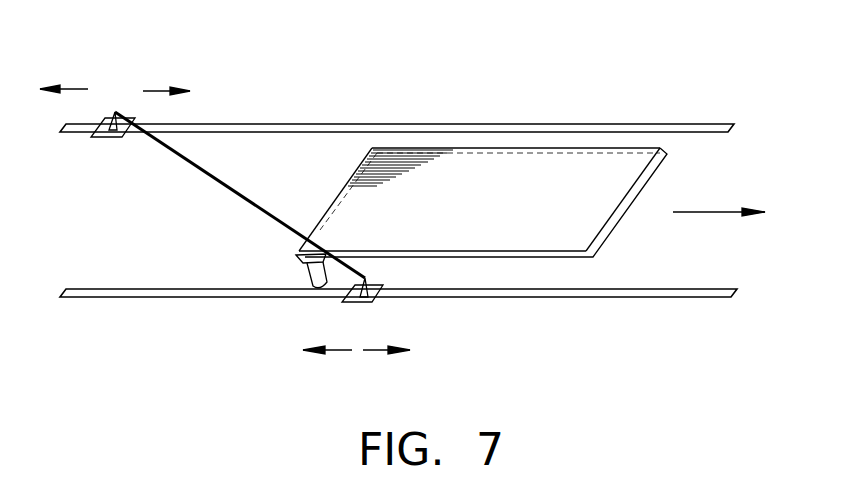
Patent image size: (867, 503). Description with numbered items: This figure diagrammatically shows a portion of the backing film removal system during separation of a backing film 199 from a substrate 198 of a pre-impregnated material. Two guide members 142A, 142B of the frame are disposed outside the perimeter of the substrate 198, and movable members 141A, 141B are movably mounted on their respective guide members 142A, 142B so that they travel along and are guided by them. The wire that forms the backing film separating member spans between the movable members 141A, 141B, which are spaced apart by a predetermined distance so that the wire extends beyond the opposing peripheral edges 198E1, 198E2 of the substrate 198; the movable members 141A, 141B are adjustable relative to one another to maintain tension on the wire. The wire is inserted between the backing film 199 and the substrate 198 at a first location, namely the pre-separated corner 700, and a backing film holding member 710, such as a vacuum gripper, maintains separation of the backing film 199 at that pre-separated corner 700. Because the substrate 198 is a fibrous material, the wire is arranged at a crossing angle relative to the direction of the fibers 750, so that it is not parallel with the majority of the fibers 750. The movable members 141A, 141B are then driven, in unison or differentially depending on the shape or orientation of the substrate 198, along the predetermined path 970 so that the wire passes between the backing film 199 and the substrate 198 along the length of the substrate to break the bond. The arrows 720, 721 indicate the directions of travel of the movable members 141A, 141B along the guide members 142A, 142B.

The movable member 141A is at (108, 140).
The movable member 141B is at (357, 303).
The guide member 142A is at (688, 128).
The guide member 142B is at (690, 297).
The substrate 198 is at (563, 160).
The peripheral edge 198E1 is at (487, 163).
The peripheral edge 198E2 is at (484, 252).
The backing film 199 is at (528, 258).
The pre-separated corner 700 is at (280, 262).
The backing film holding member 710 is at (315, 273).
The first direction of motion 720 is at (75, 89).
The second direction of motion 721 is at (151, 91).
The fibers 750 is at (346, 160).
The predetermined path 970 is at (703, 212).